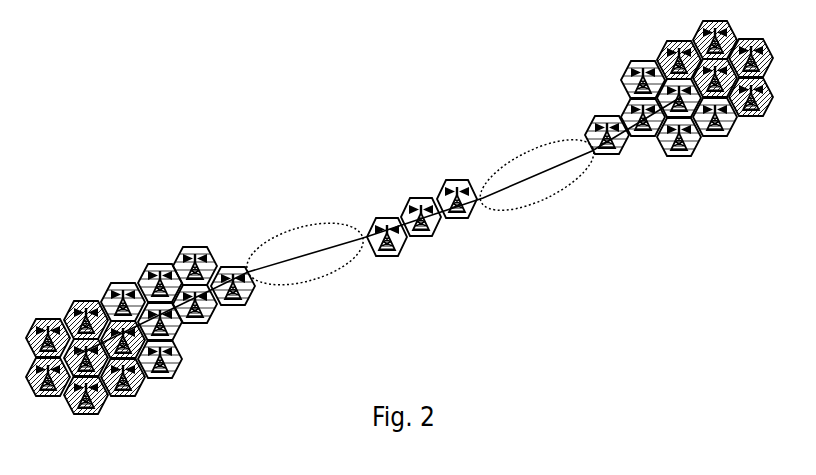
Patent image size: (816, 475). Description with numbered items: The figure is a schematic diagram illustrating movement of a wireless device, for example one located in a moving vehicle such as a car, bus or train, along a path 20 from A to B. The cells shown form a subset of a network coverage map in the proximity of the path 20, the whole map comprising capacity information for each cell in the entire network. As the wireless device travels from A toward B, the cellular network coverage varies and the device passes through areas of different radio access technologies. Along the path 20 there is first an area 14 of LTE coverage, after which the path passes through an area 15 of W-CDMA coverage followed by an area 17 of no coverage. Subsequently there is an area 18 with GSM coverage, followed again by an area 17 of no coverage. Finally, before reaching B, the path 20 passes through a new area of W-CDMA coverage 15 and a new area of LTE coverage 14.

The area of LTE coverage 14 is at (92, 298).
The area of W-CDMA coverage 15 is at (178, 252).
The area of no coverage 17 is at (293, 228).
The area with GSM coverage 18 is at (397, 212).
The path 20 is at (330, 247).
The start point of the path A is at (77, 413).
The end point of the path B is at (728, 50).